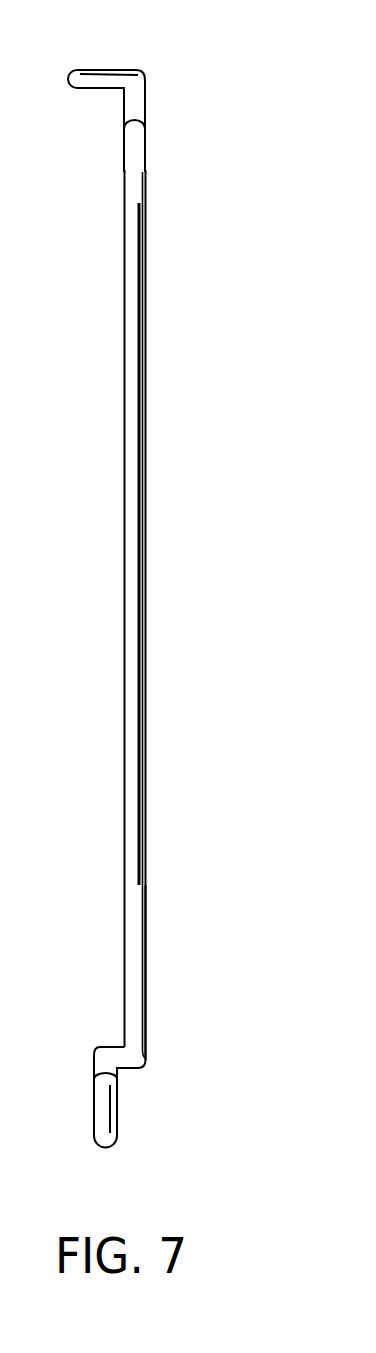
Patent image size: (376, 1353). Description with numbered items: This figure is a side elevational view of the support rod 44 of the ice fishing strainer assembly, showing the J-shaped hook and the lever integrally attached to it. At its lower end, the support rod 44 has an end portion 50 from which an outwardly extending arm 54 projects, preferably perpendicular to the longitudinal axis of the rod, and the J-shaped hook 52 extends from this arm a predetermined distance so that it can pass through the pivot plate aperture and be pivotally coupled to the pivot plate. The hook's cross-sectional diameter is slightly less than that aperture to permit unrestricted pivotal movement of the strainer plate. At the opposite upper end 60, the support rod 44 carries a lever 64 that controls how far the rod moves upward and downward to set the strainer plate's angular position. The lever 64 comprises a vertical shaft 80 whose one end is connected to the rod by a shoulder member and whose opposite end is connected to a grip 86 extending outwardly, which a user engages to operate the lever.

The support rod 44 is at (123, 450).
The end portion 50 is at (146, 950).
The J-shaped hook 52 is at (117, 1118).
The outwardly extending arm 54 is at (105, 1043).
The upper end 60 is at (145, 175).
The lever 64 is at (112, 90).
The vertical shaft 80 is at (147, 100).
The grip 86 is at (100, 67).